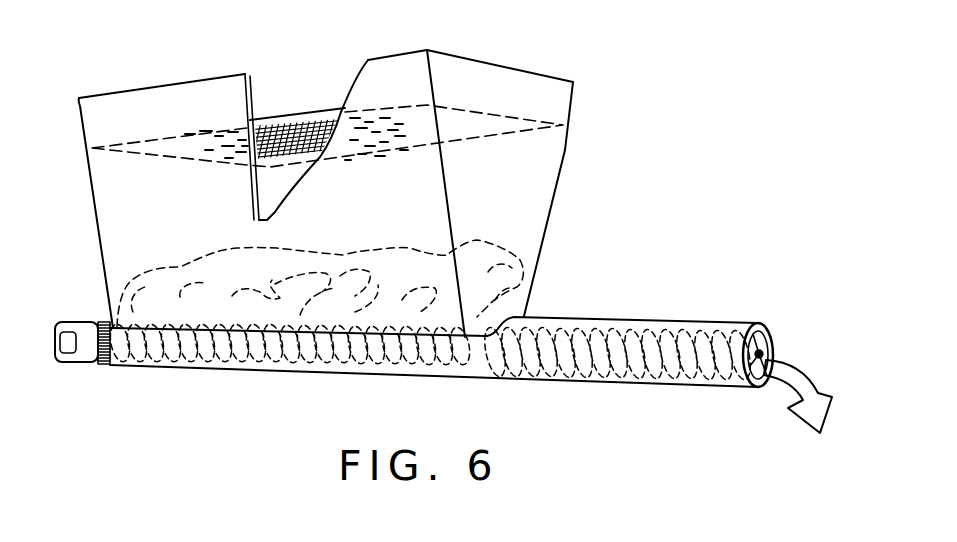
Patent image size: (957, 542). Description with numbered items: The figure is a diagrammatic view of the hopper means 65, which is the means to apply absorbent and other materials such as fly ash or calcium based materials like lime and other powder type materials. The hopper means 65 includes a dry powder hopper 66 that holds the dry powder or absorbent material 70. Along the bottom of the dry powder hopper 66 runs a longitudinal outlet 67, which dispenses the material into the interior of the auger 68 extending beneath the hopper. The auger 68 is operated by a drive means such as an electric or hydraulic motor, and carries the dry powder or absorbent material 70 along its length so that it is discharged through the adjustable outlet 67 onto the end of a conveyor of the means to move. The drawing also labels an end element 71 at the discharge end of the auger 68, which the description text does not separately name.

The hopper means 65 is at (400, 50).
The dry powder hopper 66 is at (532, 160).
The longitudinal outlet 67 is at (223, 323).
The auger 68 is at (605, 322).
The dry powder or absorbent material 70 is at (355, 267).
The outlet end of tube 71 is at (770, 340).